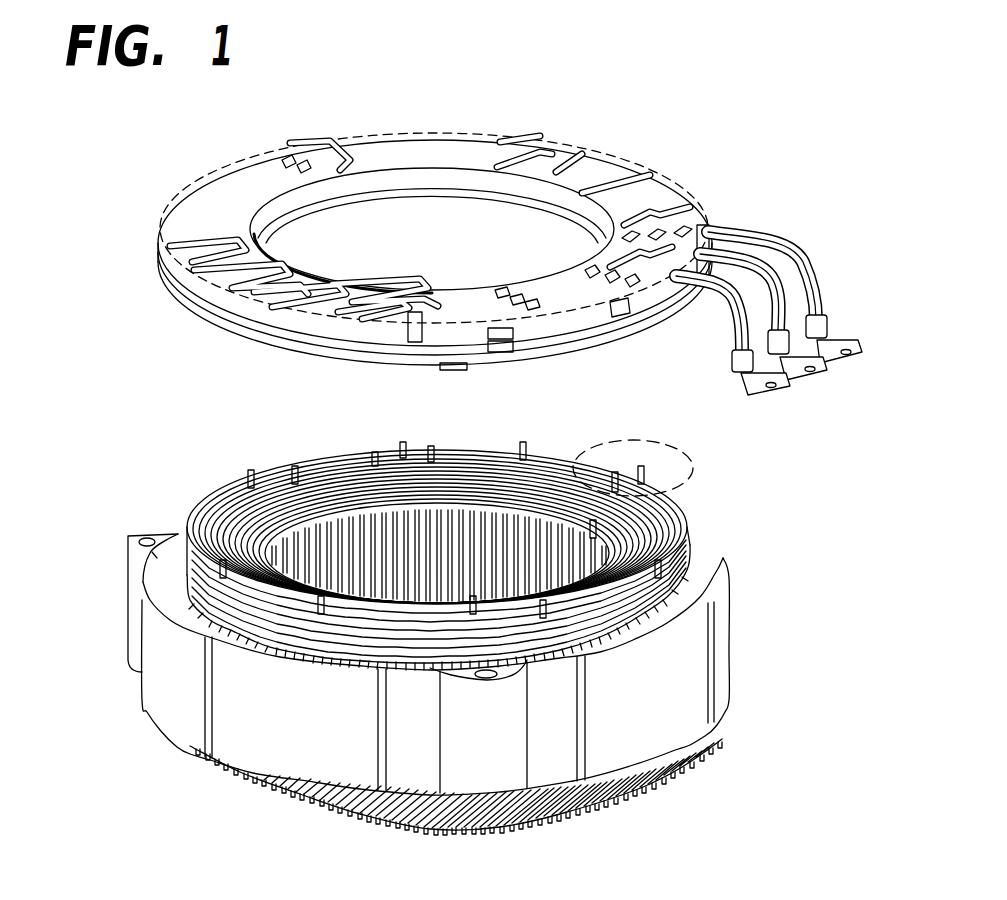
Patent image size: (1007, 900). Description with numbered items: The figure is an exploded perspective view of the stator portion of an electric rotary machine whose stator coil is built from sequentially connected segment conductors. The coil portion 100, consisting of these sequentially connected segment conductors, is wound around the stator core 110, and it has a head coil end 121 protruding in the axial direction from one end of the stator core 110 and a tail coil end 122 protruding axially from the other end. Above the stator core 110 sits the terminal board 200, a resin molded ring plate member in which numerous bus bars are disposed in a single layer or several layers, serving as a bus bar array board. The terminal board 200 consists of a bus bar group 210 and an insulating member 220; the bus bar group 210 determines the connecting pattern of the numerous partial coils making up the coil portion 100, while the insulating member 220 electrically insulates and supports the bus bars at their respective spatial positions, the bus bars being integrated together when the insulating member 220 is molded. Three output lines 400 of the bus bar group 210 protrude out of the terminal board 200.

The coil portion 100 is at (222, 484).
The stator core 110 is at (165, 670).
The head coil end 121 is at (272, 628).
The tail coil end 122 is at (262, 805).
The terminal board 200 is at (150, 319).
The bus bar group 210 is at (272, 141).
The insulating member 220 is at (200, 207).
The output lines 400 is at (786, 240).